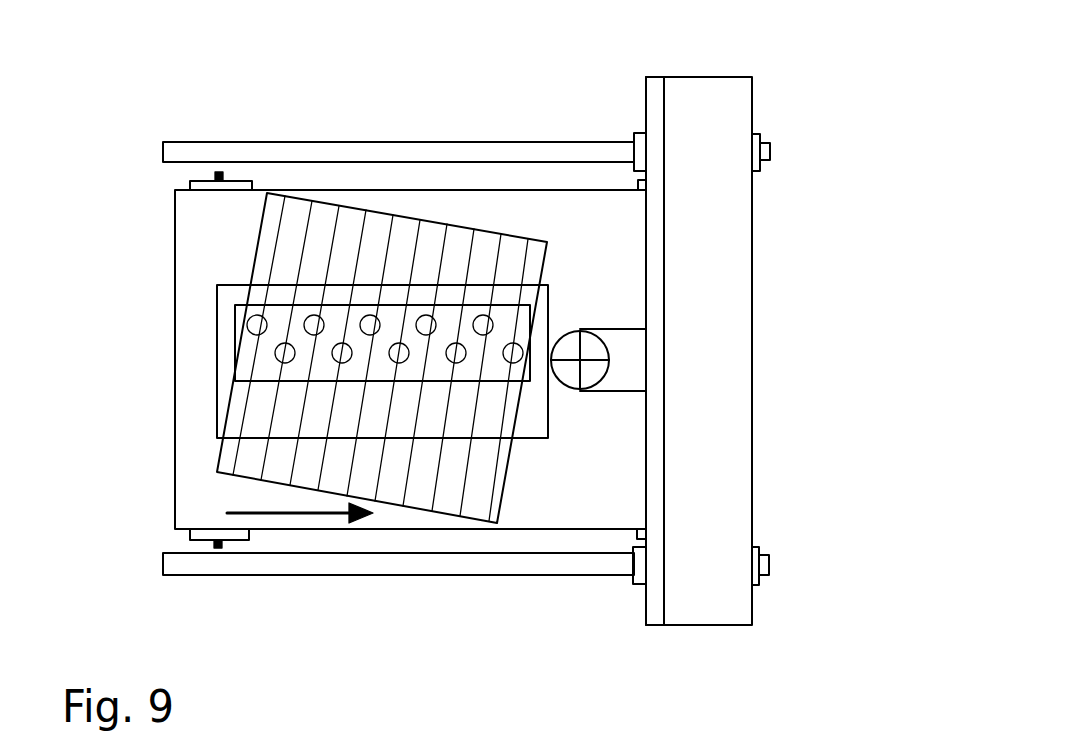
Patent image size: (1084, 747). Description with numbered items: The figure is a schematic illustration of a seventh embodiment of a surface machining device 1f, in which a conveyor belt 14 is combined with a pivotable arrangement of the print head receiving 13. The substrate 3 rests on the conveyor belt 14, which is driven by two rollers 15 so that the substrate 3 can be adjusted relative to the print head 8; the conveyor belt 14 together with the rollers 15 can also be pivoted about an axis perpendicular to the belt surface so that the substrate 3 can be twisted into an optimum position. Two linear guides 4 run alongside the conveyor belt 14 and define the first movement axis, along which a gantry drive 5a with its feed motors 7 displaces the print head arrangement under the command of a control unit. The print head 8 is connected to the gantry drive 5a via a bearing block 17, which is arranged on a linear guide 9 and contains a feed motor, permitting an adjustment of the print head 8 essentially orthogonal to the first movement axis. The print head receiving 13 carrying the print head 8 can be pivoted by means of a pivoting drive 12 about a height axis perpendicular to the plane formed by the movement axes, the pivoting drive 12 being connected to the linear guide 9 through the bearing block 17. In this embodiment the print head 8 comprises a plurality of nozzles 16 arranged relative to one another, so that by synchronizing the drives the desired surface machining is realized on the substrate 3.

The surface machining device 1f is at (612, 62).
The substrate 3 is at (255, 462).
The linear guides 4 is at (420, 150).
The gantry drive 5a is at (710, 388).
The feed motors 7 is at (757, 140).
The print head 8 is at (243, 332).
The linear guide 9 is at (655, 275).
The pivoting drive 12 is at (593, 345).
The print head receiving 13 is at (533, 420).
The conveyor belt 14 is at (223, 487).
The rollers 15 is at (205, 548).
The nozzles 16 is at (305, 318).
The bearing block 17 is at (630, 362).